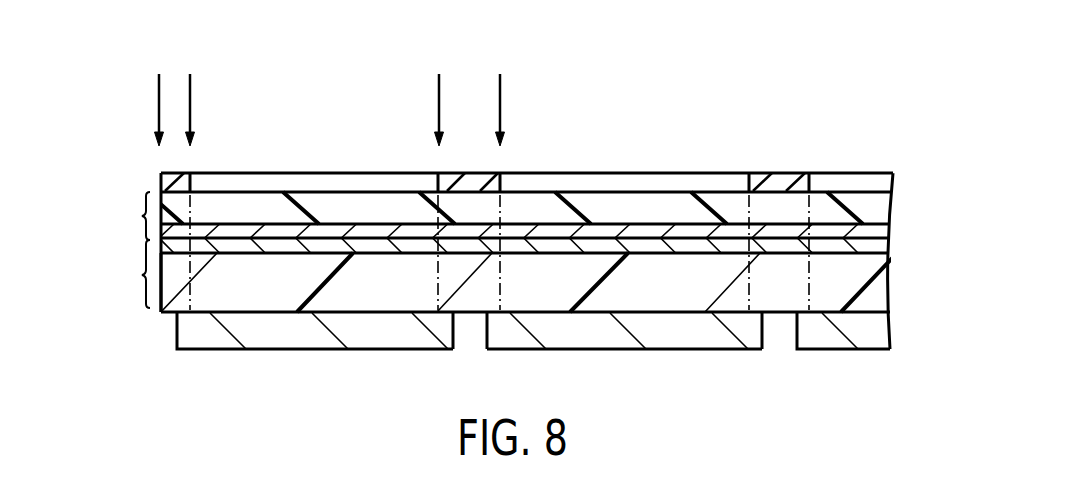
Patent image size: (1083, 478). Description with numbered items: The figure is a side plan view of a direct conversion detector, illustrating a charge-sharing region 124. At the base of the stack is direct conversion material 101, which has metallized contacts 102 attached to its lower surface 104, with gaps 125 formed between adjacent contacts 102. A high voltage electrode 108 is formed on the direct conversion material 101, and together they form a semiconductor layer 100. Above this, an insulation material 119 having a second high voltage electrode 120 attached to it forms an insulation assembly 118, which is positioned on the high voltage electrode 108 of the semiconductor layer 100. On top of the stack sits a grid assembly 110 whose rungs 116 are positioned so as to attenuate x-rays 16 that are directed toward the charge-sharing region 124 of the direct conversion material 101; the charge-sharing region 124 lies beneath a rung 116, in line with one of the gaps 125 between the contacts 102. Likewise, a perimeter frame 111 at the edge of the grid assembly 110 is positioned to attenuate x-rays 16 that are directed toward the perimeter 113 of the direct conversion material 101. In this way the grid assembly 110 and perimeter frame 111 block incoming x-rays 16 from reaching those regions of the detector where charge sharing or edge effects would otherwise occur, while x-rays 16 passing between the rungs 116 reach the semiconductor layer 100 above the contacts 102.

The x-rays 16 is at (438, 105).
The semiconductor layer 100 is at (524, 331).
The direct conversion material 101 is at (877, 292).
The metallized contacts 102 is at (210, 350).
The surface 104 is at (690, 313).
The high voltage electrode 108 is at (887, 248).
The grid assembly 110 is at (668, 172).
The perimeter frame 111 is at (175, 171).
The perimeter 113 is at (154, 296).
The rungs 116 is at (470, 173).
The insulation assembly 118 is at (534, 232).
The insulation material 119 is at (888, 207).
The high voltage electrode 120 is at (887, 231).
The charge-sharing region 124 is at (467, 293).
The gaps 125 is at (467, 352).